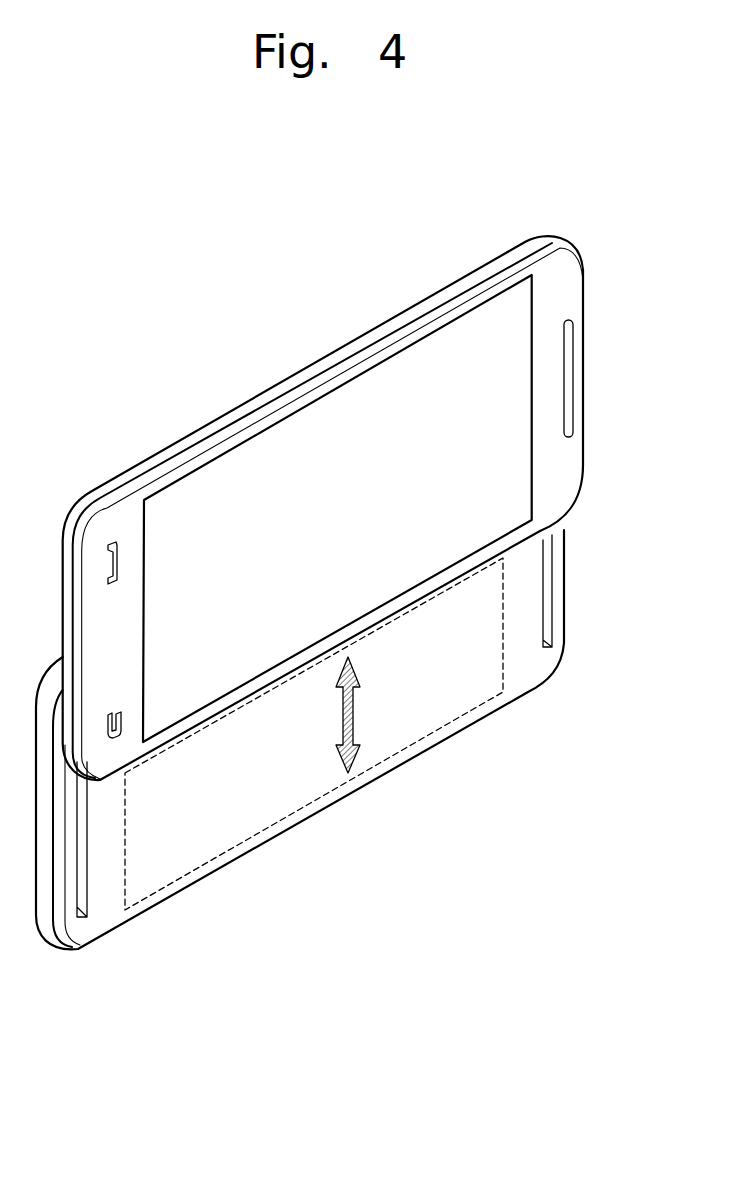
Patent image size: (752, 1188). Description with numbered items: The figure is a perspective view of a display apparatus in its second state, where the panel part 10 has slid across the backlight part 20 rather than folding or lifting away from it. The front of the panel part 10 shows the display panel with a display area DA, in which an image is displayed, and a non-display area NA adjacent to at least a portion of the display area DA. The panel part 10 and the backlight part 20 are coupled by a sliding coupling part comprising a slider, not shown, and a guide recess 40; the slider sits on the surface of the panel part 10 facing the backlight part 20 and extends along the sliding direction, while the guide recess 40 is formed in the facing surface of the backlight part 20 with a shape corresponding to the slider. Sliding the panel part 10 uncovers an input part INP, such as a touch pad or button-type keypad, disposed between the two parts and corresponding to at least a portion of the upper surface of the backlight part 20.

The panel part 10 is at (212, 421).
The backlight part 20 is at (364, 786).
The guide recess 40 is at (547, 587).
The non-display area NA is at (567, 285).
The display area DA is at (509, 408).
The input part INP is at (484, 666).